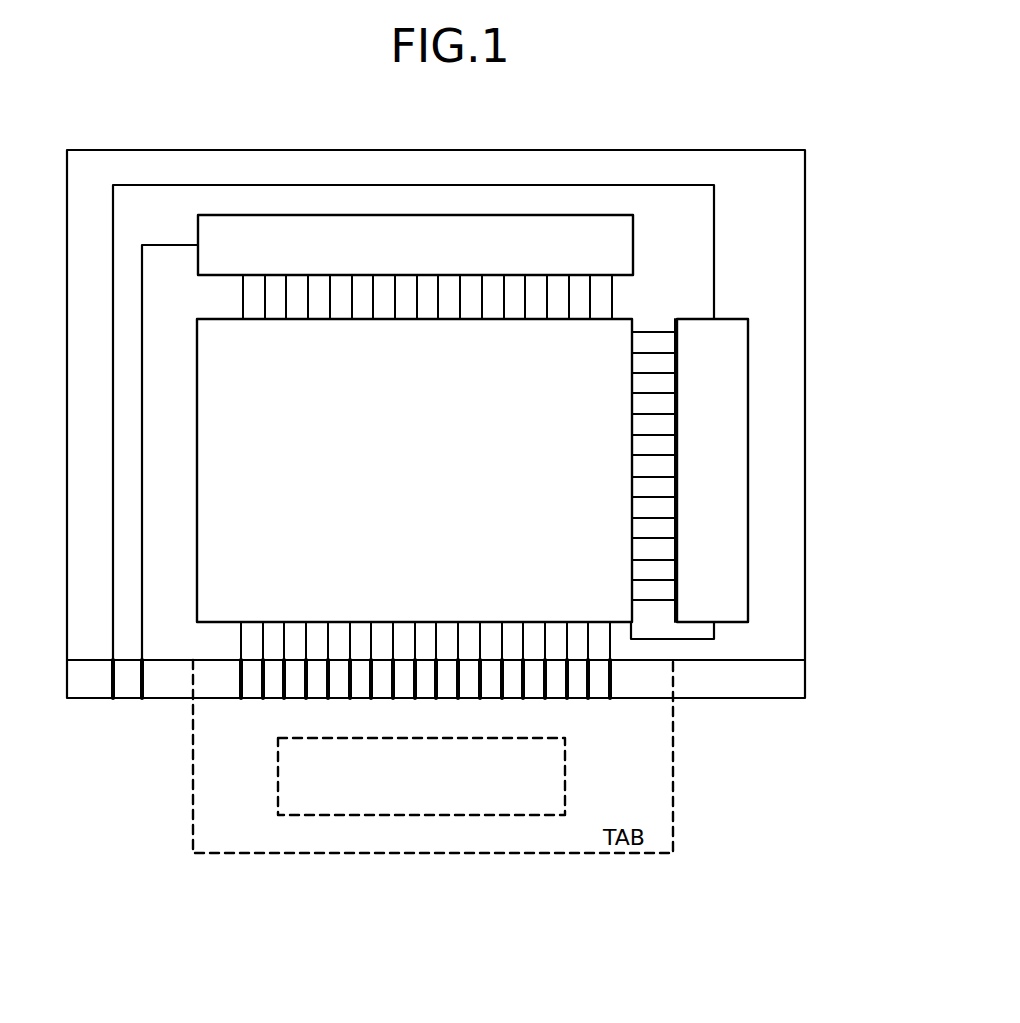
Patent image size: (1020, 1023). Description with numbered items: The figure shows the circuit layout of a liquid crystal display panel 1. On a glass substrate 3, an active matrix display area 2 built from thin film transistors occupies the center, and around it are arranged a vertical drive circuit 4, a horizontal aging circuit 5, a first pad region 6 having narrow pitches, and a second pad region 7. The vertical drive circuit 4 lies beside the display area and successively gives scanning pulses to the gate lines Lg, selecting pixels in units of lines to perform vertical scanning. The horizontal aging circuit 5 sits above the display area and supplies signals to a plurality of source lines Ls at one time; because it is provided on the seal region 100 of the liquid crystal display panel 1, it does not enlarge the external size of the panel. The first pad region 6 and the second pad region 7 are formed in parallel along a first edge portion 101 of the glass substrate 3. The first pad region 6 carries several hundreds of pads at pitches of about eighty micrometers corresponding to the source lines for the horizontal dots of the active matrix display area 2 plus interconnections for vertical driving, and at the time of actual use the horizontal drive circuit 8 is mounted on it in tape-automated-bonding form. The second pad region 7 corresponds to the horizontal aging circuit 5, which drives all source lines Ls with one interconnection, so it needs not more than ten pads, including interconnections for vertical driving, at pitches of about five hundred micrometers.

The liquid crystal display panel 1 is at (889, 713).
The active matrix display area 2 is at (197, 385).
The glass substrate 3 is at (797, 241).
The vertical drive circuit 4 is at (748, 484).
The horizontal aging circuit 5 is at (306, 214).
The first pad region 6 is at (640, 706).
The second pad region 7 is at (142, 710).
The horizontal drive circuit 8 is at (565, 789).
The seal region 100 is at (547, 204).
The first edge portion 101 is at (740, 692).
The source lines Ls is at (613, 295).
The gate lines Lg is at (656, 333).